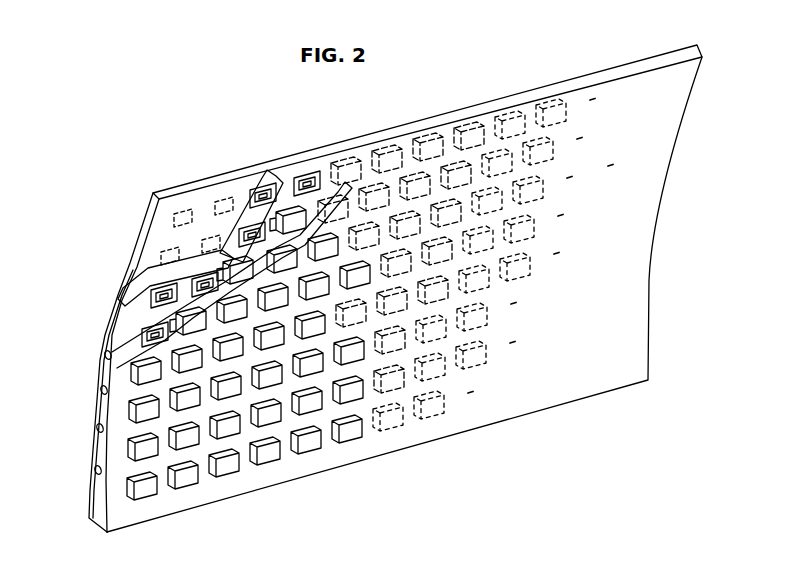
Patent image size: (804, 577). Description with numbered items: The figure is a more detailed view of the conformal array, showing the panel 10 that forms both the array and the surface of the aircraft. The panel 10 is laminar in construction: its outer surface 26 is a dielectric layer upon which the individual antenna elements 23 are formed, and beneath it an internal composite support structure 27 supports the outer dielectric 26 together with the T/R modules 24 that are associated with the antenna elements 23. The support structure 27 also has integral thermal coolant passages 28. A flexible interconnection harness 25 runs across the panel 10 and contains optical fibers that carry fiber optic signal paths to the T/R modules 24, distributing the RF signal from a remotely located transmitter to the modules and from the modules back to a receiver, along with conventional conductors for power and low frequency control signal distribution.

The panel 10 is at (400, 452).
The antenna elements 23 is at (158, 244).
The T/R modules 24 is at (356, 168).
The interconnection harness 25 is at (182, 314).
The outer surface 26 is at (122, 272).
The internal composite support structure 27 is at (100, 415).
The thermal coolant passages 28 is at (94, 470).